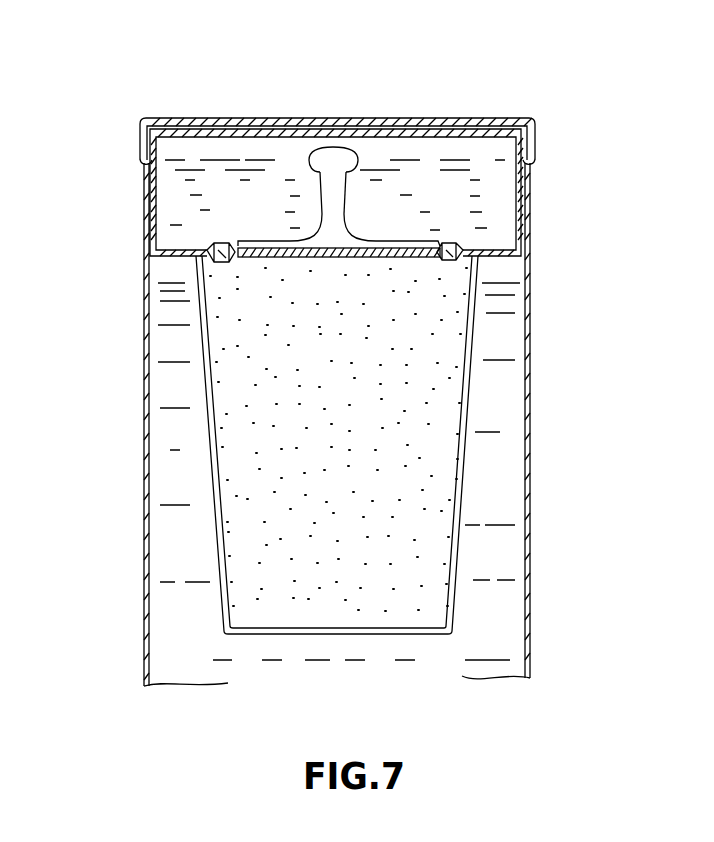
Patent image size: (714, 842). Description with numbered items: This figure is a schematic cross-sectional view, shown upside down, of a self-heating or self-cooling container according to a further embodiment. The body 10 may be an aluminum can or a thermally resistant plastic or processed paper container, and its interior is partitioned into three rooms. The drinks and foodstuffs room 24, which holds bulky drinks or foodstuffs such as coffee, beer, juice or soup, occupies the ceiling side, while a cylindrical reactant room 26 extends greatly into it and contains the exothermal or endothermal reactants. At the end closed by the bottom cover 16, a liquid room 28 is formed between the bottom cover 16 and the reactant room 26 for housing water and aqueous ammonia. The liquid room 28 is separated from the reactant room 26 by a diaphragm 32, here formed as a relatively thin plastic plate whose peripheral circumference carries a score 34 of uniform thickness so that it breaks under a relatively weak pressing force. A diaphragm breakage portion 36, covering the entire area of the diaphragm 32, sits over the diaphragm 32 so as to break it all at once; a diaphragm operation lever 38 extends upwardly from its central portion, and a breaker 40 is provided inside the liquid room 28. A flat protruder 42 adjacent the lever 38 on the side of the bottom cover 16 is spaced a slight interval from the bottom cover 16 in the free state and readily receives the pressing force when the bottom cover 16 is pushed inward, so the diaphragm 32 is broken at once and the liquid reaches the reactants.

The body 10 is at (532, 490).
The bottom cover 16 is at (310, 123).
The drinks and foodstuffs room 24 is at (516, 572).
The reactant room 26 is at (232, 463).
The liquid room 28 is at (497, 178).
The diaphragm 32 is at (383, 256).
The score 34 is at (461, 243).
The diaphragm breakage portion 36 is at (357, 238).
The diaphragm operation lever 38 is at (333, 197).
The breaker 40 is at (352, 203).
The flat protruder 42 is at (337, 160).